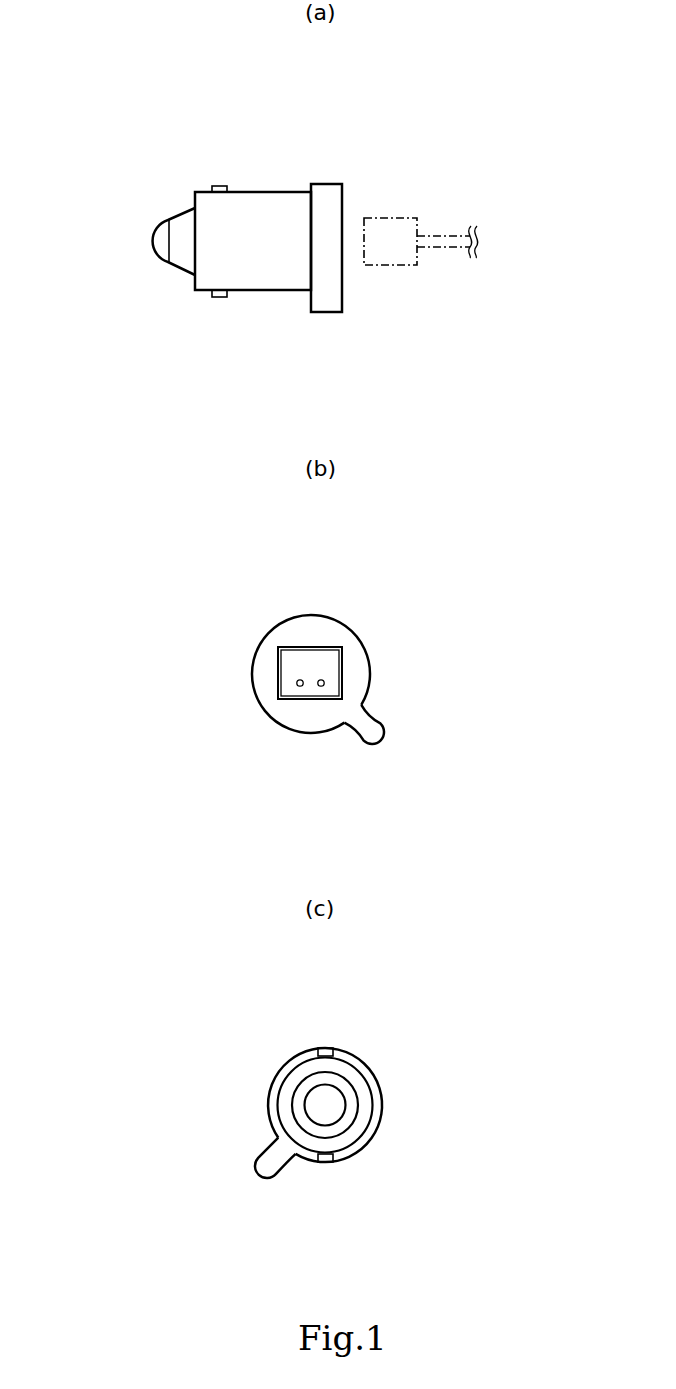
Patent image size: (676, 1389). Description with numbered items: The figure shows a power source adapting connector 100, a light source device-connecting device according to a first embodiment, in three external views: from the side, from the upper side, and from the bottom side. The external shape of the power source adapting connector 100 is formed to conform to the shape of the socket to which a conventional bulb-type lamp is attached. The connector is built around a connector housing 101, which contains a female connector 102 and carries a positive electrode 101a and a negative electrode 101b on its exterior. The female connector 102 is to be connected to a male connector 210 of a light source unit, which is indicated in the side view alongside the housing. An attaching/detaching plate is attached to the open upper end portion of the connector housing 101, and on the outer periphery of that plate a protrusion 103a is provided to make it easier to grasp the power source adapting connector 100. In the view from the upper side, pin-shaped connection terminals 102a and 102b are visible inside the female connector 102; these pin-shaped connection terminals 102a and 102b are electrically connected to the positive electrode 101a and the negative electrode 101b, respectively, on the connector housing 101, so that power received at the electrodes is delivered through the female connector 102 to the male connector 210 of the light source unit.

The power source adapting connector 100 is at (367, 135).
The connector housing 101 is at (258, 205).
The positive electrode 101a is at (172, 205).
The negative electrode 101b is at (222, 173).
The female connector 102 is at (307, 638).
The pin-shaped connection terminal 102a is at (300, 688).
The pin-shaped connection terminal 102b is at (321, 688).
The protrusion 103a is at (367, 730).
The male connector 210 is at (410, 220).